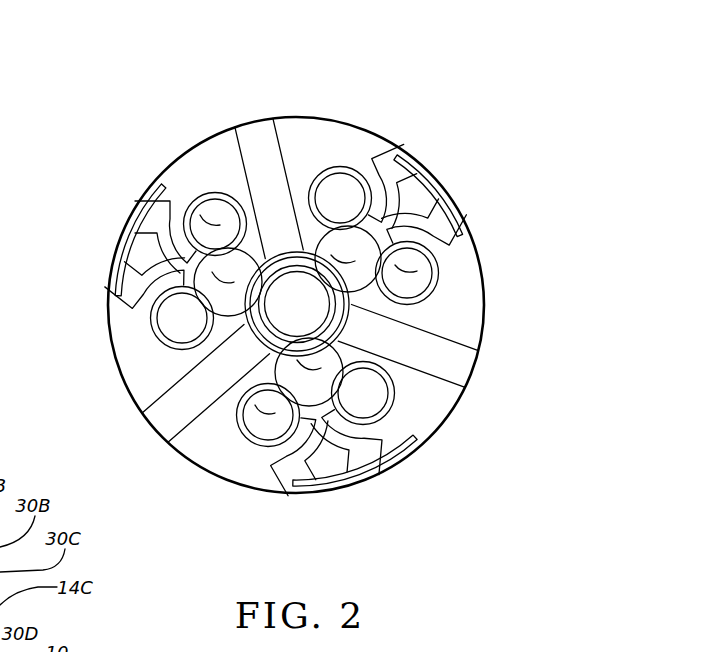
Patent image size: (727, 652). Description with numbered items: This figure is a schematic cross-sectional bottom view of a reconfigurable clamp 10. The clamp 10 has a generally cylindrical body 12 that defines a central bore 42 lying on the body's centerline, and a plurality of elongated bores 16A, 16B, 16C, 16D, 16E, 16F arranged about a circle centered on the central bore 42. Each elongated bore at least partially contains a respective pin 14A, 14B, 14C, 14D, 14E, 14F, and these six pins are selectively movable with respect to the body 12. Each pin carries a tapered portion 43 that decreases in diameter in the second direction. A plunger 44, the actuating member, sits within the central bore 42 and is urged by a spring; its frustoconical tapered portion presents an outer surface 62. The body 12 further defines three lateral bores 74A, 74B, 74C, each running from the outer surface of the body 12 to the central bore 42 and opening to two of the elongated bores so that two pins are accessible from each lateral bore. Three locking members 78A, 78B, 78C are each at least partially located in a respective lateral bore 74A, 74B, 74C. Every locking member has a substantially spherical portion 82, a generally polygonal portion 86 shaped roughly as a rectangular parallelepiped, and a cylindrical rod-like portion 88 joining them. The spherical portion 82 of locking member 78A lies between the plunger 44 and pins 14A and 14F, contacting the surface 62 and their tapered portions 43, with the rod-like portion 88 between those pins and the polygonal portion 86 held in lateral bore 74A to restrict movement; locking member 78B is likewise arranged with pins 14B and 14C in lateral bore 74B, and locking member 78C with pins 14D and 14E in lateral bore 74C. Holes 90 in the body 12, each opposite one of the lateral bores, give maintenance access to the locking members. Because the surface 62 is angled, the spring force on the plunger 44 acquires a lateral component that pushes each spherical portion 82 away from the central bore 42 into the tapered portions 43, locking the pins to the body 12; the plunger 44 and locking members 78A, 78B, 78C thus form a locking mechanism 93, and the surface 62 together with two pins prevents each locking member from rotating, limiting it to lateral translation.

The reconfigurable clamp 10 is at (68, 145).
The body 12 is at (330, 116).
The pin 14A is at (203, 190).
The pin 14B is at (370, 150).
The pin 14C is at (430, 280).
The pin 14D is at (365, 400).
The pin 14E is at (250, 440).
The pin 14F is at (153, 305).
The elongated bore 16A is at (222, 205).
The elongated bore 16B is at (345, 175).
The elongated bore 16C is at (440, 275).
The elongated bore 16D is at (395, 400).
The elongated bore 16E is at (192, 416).
The elongated bore 16F is at (175, 330).
The central bore 42 is at (275, 352).
The tapered portion 43 is at (212, 197).
The plunger 44 is at (284, 315).
The outer surface 62 is at (318, 252).
The lateral bore 74A is at (160, 187).
The lateral bore 74B is at (393, 125).
The lateral bore 74C is at (395, 437).
The locking member 78A is at (147, 233).
The locking member 78B is at (433, 167).
The locking member 78C is at (283, 477).
The spherical portion 82 is at (252, 255).
The polygonal portion 86 is at (433, 198).
The rod-like portion 88 is at (443, 182).
The hole 90 is at (257, 200).
The locking mechanism 93 is at (405, 89).